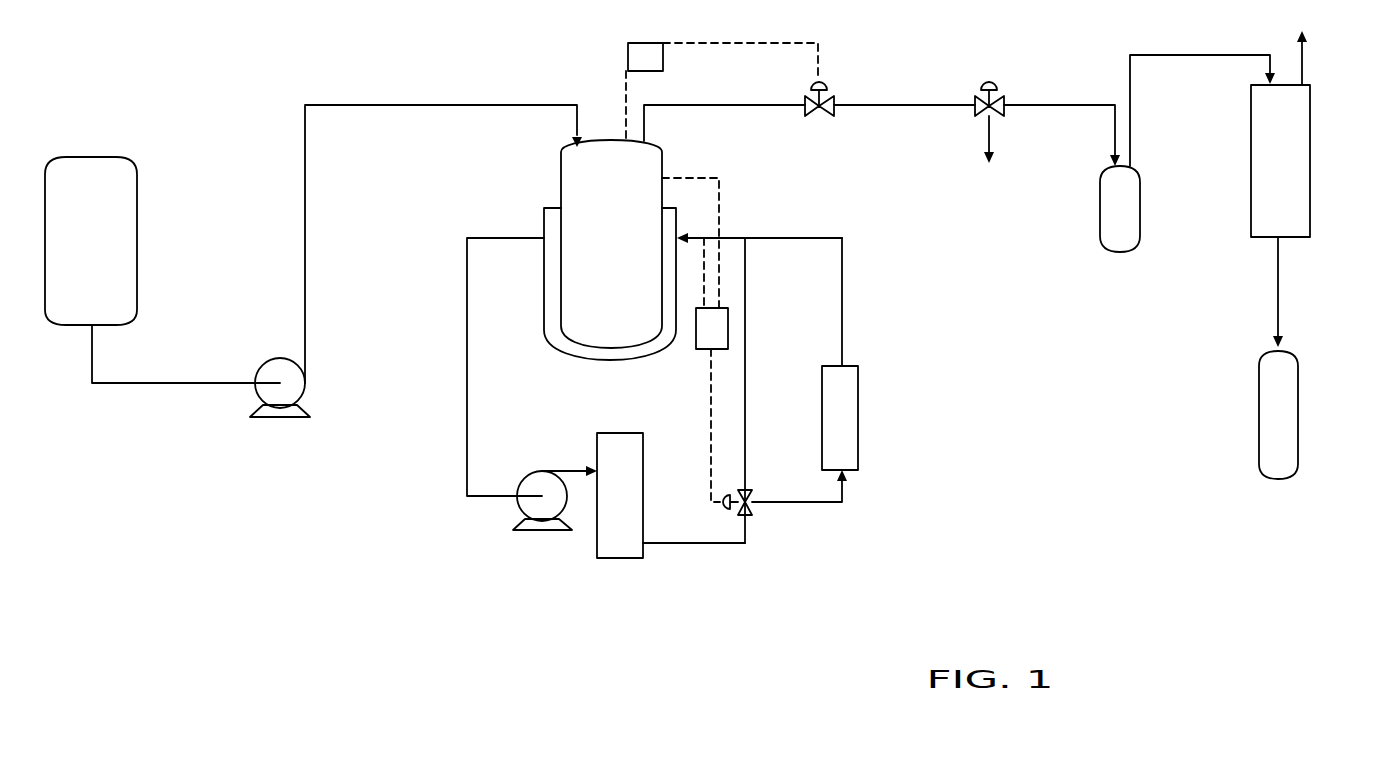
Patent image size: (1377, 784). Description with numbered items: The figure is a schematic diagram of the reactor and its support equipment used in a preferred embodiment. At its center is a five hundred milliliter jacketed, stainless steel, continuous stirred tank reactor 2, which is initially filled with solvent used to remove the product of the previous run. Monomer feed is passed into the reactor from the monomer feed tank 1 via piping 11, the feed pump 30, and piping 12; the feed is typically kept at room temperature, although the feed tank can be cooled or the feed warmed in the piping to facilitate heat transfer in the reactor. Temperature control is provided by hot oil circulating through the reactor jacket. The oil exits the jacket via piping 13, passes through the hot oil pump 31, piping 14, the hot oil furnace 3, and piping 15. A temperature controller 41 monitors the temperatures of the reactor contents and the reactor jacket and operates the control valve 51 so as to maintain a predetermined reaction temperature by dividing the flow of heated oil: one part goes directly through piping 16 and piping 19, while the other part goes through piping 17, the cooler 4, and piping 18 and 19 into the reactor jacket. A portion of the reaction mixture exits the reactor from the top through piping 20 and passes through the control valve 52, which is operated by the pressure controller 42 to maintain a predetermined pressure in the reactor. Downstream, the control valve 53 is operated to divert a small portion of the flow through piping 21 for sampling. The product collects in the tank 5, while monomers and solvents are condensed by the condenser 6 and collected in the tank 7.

The monomer feed tank 1 is at (137, 203).
The piping 11 is at (163, 383).
The feed pump 30 is at (310, 409).
The piping 12 is at (305, 218).
The continuous stirred tank reactor 2 is at (558, 172).
The pressure controller 42 is at (644, 43).
The piping 20 is at (688, 105).
The control valve 52 is at (826, 100).
The control valve 53 is at (996, 100).
The piping 21 is at (989, 137).
The tank 5 is at (1100, 226).
The condenser 6 is at (1310, 141).
The tank 7 is at (1298, 421).
The piping 13 is at (467, 330).
The hot oil pump 31 is at (533, 530).
The piping 14 is at (578, 468).
The hot oil furnace 3 is at (618, 558).
The piping 15 is at (700, 543).
The piping 16 is at (745, 385).
The control valve 51 is at (752, 505).
The temperature controller 41 is at (690, 340).
The piping 19 is at (722, 238).
The piping 18 is at (843, 270).
The cooler 4 is at (858, 415).
The piping 17 is at (808, 503).